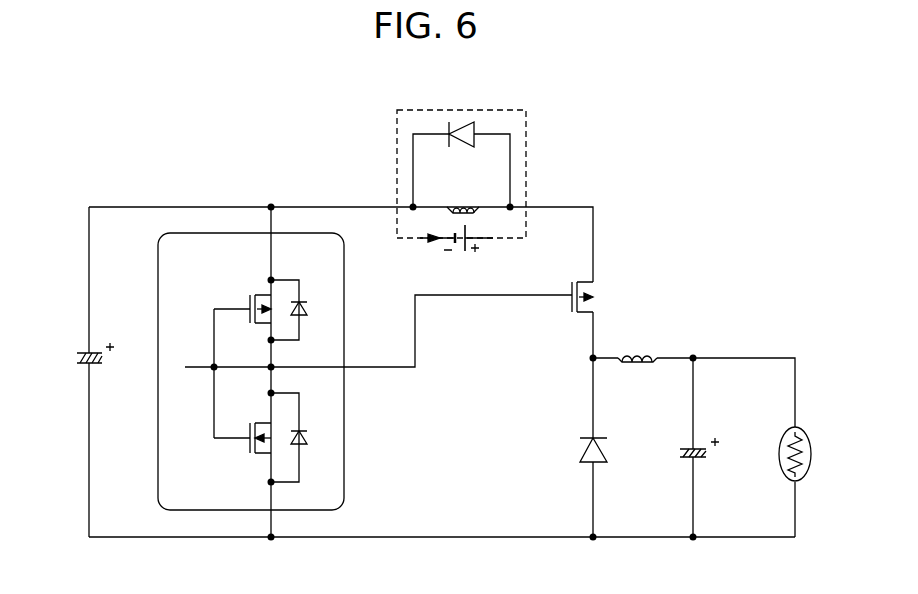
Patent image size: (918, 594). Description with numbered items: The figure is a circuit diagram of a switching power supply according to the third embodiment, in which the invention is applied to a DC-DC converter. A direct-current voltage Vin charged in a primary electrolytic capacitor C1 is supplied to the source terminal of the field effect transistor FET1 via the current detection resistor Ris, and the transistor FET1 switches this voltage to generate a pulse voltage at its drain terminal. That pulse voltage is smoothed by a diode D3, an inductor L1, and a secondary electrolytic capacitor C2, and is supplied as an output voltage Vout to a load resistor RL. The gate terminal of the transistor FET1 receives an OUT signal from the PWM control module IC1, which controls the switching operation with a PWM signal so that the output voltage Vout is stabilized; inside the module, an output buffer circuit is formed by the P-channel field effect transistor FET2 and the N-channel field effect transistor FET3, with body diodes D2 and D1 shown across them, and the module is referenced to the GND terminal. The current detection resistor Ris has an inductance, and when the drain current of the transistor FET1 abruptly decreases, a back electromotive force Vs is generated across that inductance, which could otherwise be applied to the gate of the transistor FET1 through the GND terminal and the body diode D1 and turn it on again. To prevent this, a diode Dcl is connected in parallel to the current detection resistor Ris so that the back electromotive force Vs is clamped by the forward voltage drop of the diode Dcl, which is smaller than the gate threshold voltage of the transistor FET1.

The direct-current voltage Vin is at (341, 267).
The GND terminal GND is at (442, 452).
The primary electrolytic capacitor C1 is at (79, 357).
The PWM control module IC1 is at (231, 371).
The field effect transistor FET2 is at (234, 289).
The body diode of FET2 D2 is at (305, 310).
The field effect transistor FET3 is at (233, 413).
The body diode D1 is at (305, 437).
The OUT signal OUT is at (378, 321).
The back electromotive force Vs is at (461, 192).
The diode Dcl is at (462, 166).
The current detection resistor Ris is at (476, 182).
The field effect transistor FET1 is at (612, 315).
The inductor L1 is at (643, 345).
The output voltage Vout is at (744, 380).
The diode D3 is at (581, 447).
The secondary electrolytic capacitor C2 is at (684, 447).
The load resistor RL is at (778, 482).